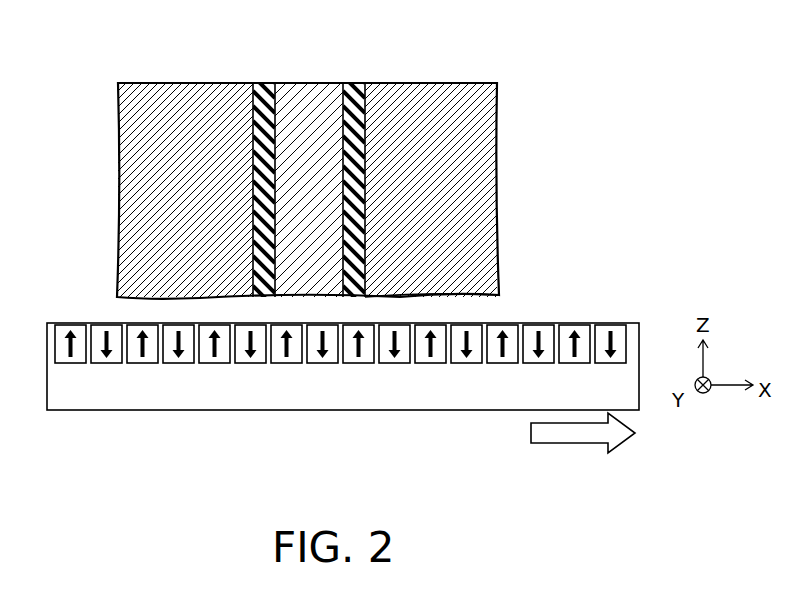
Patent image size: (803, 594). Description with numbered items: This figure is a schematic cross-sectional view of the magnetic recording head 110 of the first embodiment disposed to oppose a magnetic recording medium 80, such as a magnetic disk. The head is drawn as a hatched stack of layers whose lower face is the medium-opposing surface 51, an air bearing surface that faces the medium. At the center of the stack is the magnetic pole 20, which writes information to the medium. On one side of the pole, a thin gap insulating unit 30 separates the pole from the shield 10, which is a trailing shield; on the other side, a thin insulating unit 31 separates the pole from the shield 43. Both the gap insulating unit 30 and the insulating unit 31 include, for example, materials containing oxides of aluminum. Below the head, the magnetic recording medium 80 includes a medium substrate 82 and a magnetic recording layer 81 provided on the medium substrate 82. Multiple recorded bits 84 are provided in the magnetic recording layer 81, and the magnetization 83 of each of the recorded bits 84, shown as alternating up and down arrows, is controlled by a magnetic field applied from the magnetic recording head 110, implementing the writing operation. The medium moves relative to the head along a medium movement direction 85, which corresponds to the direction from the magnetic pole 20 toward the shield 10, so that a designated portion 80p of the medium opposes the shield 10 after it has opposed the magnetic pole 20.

The magnetic recording head 110 is at (528, 130).
The shield 10 is at (440, 100).
The magnetic pole 20 is at (303, 115).
The gap insulating unit 30 is at (350, 110).
The insulating unit 31 is at (263, 110).
The shield 43 is at (175, 105).
The medium-opposing surface 51 is at (413, 280).
The magnetic recording medium 80 is at (343, 410).
The magnetic recording layer 81 is at (82, 360).
The medium substrate 82 is at (135, 383).
The magnetization 83 is at (225, 357).
The recorded bits 84 is at (253, 360).
The designated portion 80p is at (327, 363).
The medium movement direction 85 is at (572, 433).